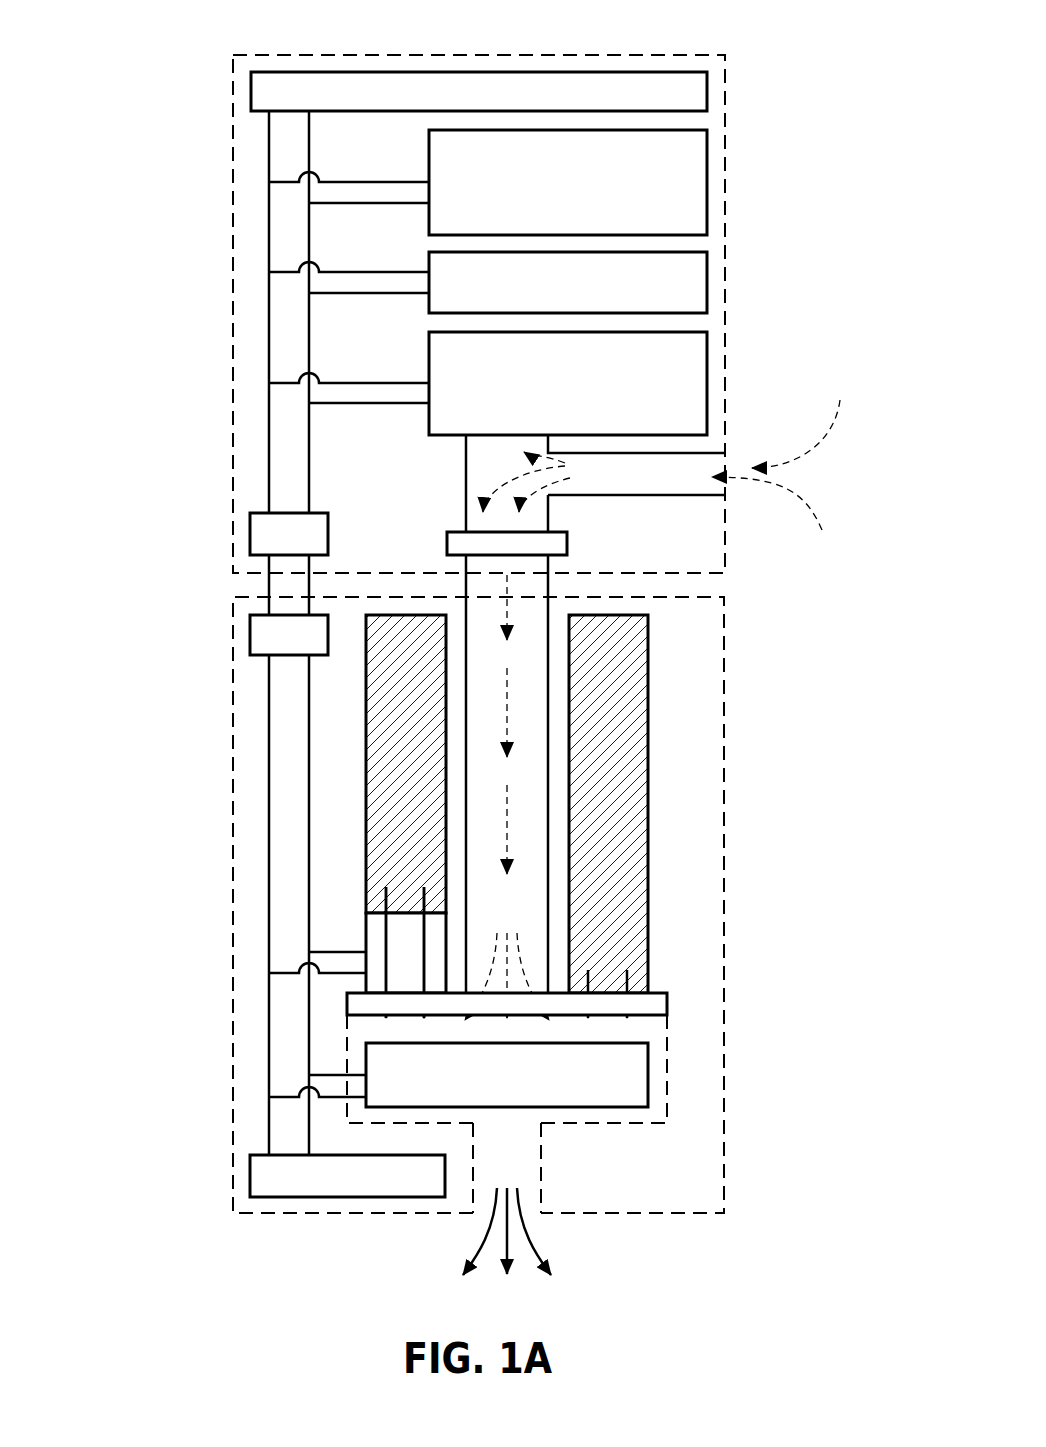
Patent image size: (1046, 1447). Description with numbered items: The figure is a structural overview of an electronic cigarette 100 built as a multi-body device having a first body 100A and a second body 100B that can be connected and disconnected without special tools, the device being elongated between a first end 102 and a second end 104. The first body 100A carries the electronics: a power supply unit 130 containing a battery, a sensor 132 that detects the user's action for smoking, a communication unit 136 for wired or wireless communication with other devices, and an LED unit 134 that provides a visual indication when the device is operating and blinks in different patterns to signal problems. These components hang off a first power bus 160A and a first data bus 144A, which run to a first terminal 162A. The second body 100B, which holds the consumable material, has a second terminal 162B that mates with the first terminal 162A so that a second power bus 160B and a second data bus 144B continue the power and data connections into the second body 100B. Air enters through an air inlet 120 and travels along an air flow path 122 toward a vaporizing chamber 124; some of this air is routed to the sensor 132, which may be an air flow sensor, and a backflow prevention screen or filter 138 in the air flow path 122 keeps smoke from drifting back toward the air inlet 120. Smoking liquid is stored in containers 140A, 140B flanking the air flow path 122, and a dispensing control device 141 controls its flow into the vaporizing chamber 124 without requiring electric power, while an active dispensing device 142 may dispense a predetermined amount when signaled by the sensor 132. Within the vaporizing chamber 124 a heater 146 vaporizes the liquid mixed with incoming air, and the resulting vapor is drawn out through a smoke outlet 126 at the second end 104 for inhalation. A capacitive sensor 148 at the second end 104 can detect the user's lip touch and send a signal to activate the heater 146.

The electronic cigarette 100 is at (198, 67).
The first end 102 is at (660, 55).
The second end 104 is at (275, 1213).
The first body 100A is at (232, 163).
The second body 100B is at (232, 1065).
The air inlet 120 is at (667, 478).
The air flow path 122 is at (520, 662).
The vaporizing chamber 124 is at (667, 1036).
The smoke outlet 126 is at (523, 1170).
The power supply unit 130 is at (707, 183).
The sensor 132 is at (707, 385).
The LED unit 134 is at (707, 90).
The communication unit 136 is at (707, 283).
The backflow prevention screen or filter 138 is at (567, 543).
The container 140A is at (366, 873).
The container 140B is at (648, 813).
The dispensing control device 141 is at (667, 1005).
The active dispensing device 142 is at (366, 928).
The first data bus 144A is at (309, 330).
The second data bus 144B is at (309, 820).
The heater 146 is at (648, 1073).
The capacitive sensor 148 is at (250, 1175).
The first power bus 160A is at (269, 232).
The second power bus 160B is at (269, 725).
The first terminal 162A is at (250, 536).
The second terminal 162B is at (250, 634).